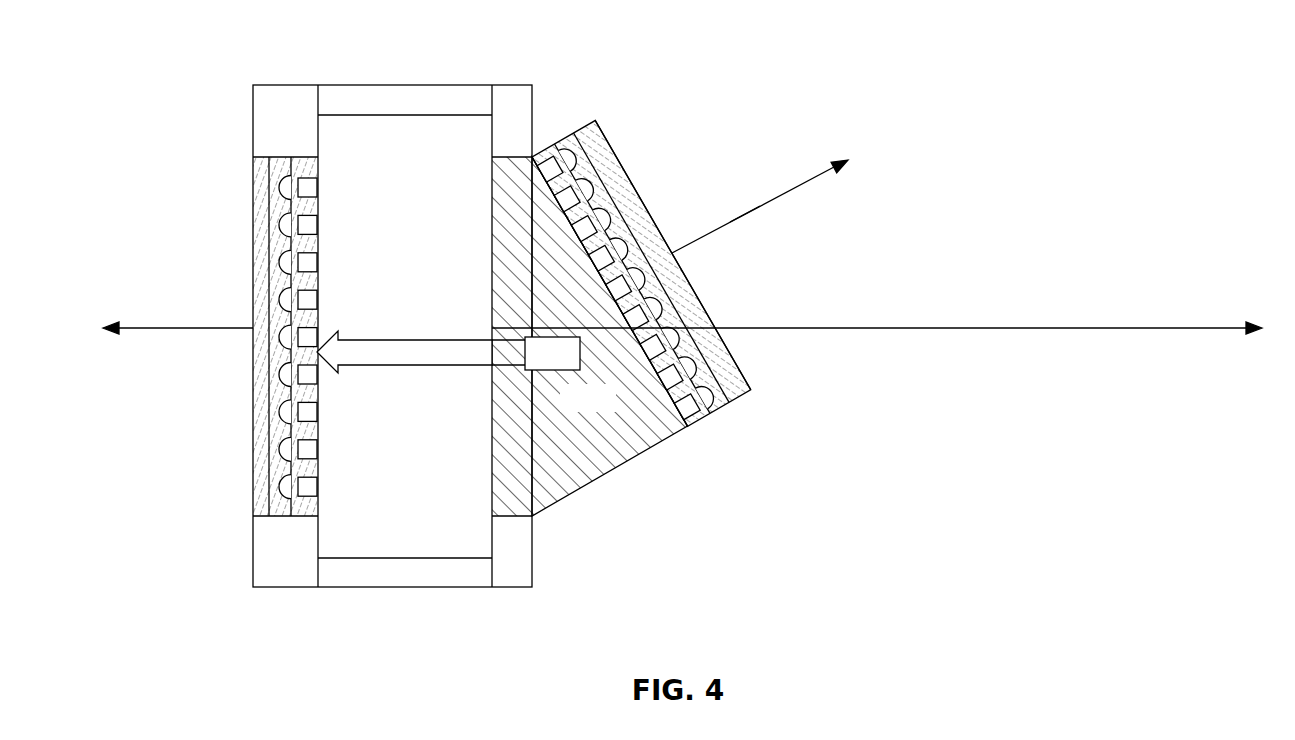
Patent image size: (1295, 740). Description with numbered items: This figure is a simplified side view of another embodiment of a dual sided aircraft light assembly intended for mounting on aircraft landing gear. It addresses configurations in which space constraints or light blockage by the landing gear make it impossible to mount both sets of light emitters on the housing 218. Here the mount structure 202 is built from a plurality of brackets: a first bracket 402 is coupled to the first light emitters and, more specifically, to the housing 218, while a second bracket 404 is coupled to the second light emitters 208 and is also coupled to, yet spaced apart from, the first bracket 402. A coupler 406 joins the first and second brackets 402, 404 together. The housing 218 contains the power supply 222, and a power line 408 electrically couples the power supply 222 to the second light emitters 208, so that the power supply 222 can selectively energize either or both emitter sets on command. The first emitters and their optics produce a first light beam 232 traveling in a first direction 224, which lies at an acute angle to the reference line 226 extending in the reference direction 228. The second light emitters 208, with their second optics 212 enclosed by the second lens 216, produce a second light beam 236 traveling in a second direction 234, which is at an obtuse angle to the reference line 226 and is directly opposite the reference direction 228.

The mount structure 202 is at (367, 50).
The second light emitters 208 is at (332, 466).
The second optics 212 is at (269, 501).
The second lens 216 is at (260, 452).
The housing 218 is at (612, 410).
The power supply 222 is at (560, 337).
The first direction 224 is at (840, 158).
The reference line 226 is at (935, 327).
The reference direction 228 is at (1252, 326).
The first light beam 232 is at (747, 212).
The second direction 234 is at (116, 324).
The second light beam 236 is at (166, 327).
The first bracket 402 is at (533, 108).
The second bracket 404 is at (253, 108).
The coupler 406 is at (393, 577).
The power line 408 is at (398, 340).